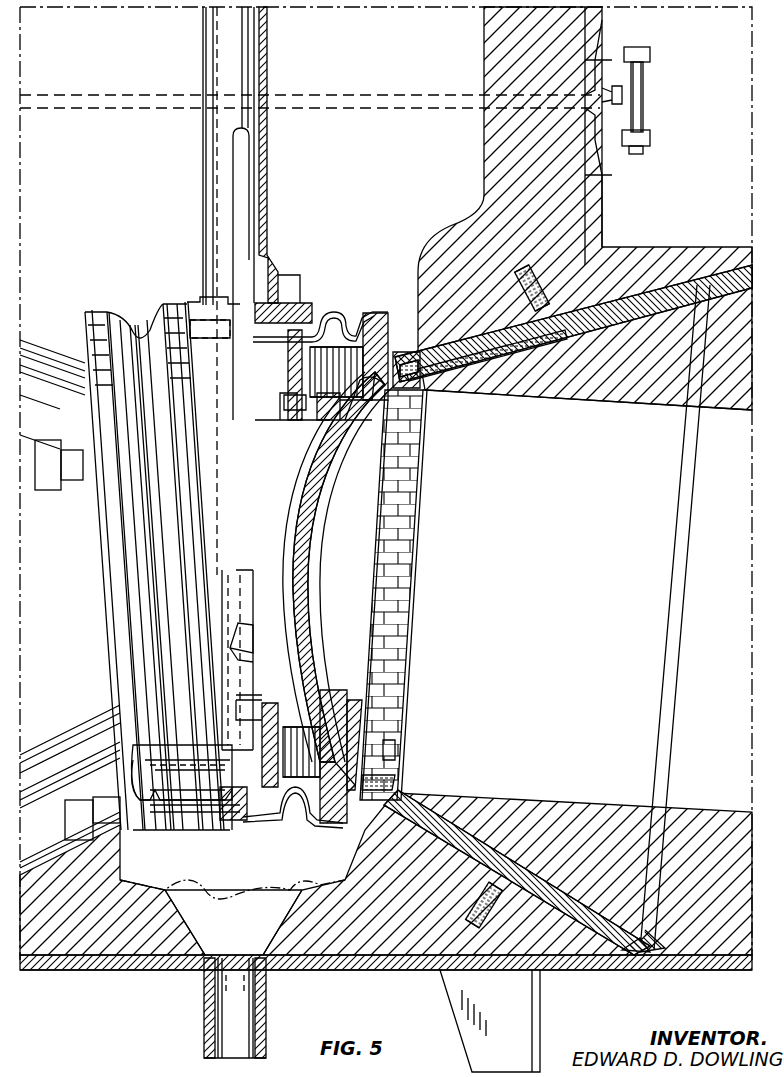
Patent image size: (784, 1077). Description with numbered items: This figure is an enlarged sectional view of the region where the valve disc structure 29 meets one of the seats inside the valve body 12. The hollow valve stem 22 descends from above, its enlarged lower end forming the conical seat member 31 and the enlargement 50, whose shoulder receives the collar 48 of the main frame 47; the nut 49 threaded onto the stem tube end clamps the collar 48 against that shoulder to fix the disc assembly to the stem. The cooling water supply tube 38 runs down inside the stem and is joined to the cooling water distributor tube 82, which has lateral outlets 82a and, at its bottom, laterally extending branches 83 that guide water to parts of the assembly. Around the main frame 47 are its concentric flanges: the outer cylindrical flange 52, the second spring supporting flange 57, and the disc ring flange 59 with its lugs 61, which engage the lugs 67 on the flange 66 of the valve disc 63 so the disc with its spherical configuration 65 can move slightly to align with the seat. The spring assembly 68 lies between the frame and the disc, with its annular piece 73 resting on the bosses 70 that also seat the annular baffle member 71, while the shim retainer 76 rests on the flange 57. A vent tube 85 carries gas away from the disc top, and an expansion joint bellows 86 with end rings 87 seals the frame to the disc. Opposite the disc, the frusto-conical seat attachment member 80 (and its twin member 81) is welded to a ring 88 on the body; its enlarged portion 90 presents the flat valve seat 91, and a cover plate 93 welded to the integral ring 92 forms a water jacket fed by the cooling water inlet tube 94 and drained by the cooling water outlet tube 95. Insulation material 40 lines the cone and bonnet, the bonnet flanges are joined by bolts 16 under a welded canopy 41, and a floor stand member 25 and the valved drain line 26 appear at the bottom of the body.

The valve body 12 is at (668, 242).
The bolts 16 is at (644, 55).
The valve stem 22 is at (205, 45).
The floor stand members 25 is at (540, 1008).
The valved drain line 26 is at (203, 1036).
The valve disc structure 29 is at (358, 290).
The conical seat member 31 is at (200, 278).
The cooling water supply tube 38 is at (250, 150).
The insulation material 40 is at (605, 392).
The welded canopy 41 is at (622, 95).
The main frame 47 is at (226, 830).
The collar 48 is at (283, 300).
The nut 49 is at (288, 350).
The enlargement 50 is at (278, 268).
The cylindrical flange 52 is at (328, 340).
The second spring supporting flange 57 is at (280, 418).
The disc ring flange 59 is at (272, 420).
The lugs 61 is at (345, 420).
The valve disc 63 is at (396, 745).
The spherical configuration 65 is at (315, 528).
The flange 66 is at (340, 430).
The lugs 67 is at (318, 418).
The spring assembly 68 is at (301, 782).
The bosses 70 is at (392, 768).
The annular baffle member 71 is at (382, 318).
The annular piece 73 is at (392, 706).
The shim retainer 76 is at (262, 700).
The frusto-conical seat attachment member 80 is at (420, 858).
The frusto-conical seat attachment member 81 is at (70, 868).
The cooling water distributor tube 82 is at (257, 612).
The lateral outlets 82a is at (254, 640).
The laterally extending branches 83 is at (175, 750).
The vent tube 85 is at (338, 322).
The expansion joint bellows 86 is at (356, 310).
The ring 87 is at (262, 825).
The ring 88 is at (645, 958).
The enlarged portion 90 is at (403, 795).
The valve seat 91 is at (412, 350).
The integral ring 92 is at (560, 290).
The cover plate 93 is at (468, 333).
The cooling water inlet tube 94 is at (470, 895).
The cooling water outlet tube 95 is at (525, 246).